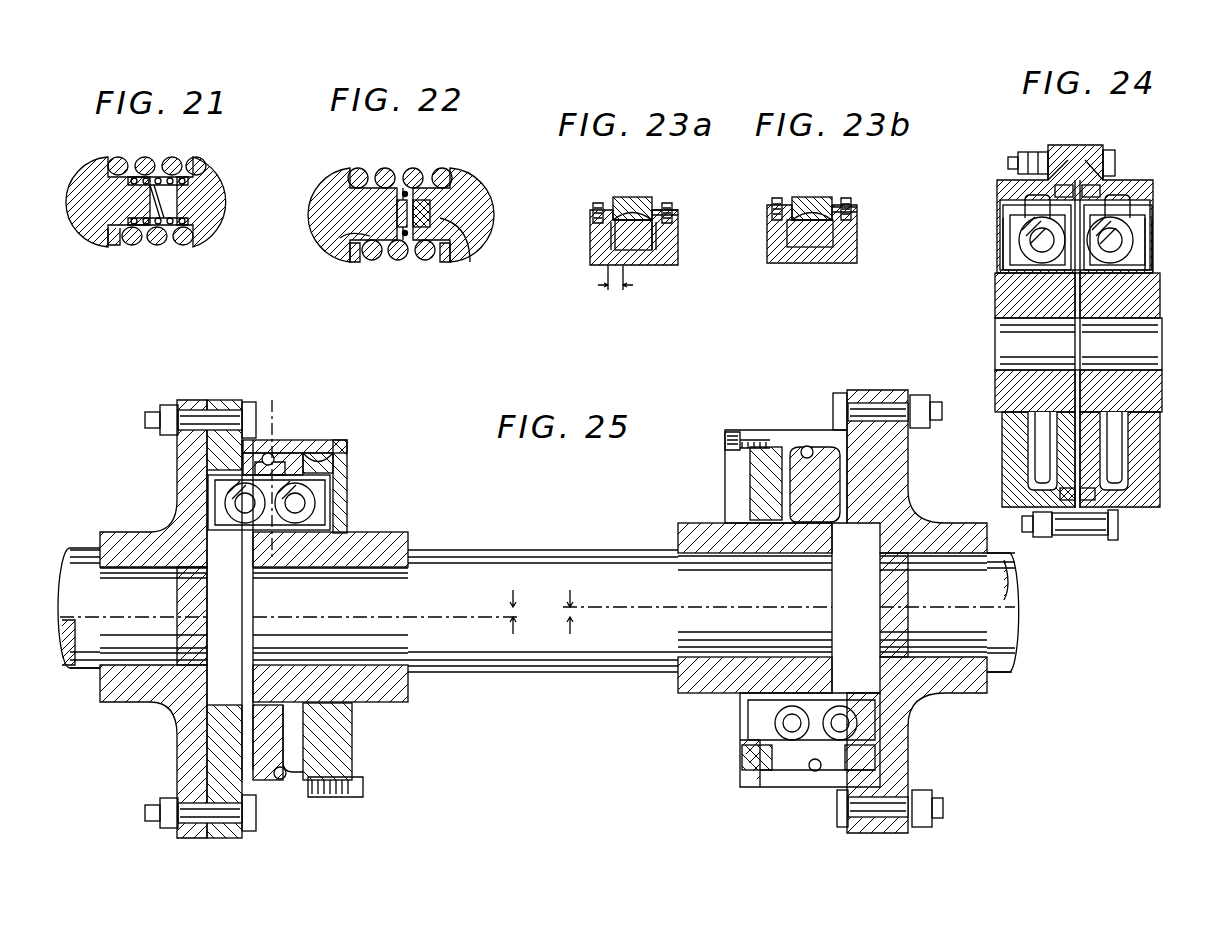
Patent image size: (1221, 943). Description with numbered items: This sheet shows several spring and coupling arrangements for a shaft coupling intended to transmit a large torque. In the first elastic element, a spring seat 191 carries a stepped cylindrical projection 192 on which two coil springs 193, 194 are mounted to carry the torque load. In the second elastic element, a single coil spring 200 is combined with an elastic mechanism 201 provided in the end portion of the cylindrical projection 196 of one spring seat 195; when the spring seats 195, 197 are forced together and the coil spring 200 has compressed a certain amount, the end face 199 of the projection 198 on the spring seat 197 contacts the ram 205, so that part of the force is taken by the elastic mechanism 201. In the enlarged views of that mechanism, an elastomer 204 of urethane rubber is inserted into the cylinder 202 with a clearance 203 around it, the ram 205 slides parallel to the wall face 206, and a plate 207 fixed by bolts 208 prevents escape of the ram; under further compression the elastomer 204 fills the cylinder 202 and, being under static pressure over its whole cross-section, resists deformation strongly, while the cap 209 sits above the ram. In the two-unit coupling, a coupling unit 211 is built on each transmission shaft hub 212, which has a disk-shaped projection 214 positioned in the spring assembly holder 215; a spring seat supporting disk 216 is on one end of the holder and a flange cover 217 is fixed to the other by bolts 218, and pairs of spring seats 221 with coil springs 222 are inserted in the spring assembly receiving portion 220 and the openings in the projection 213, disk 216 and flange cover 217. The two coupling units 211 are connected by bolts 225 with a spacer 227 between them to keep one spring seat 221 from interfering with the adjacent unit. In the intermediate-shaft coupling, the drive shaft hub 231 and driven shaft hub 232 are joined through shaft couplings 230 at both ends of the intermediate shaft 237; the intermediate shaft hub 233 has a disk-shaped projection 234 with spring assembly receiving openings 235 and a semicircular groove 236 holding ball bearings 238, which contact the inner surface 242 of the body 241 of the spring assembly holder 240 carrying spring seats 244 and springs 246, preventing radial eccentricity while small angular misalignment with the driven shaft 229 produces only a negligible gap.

In FIG. 21, the spring seat 191 is at (252, 212).
In FIG. 21, the stepped cylindrical projection 192 is at (188, 247).
In FIG. 21, the coil spring 193 is at (195, 160).
In FIG. 21, the coil spring 194 is at (170, 188).
In FIG. 22, the spring seat 195 is at (480, 178).
In FIG. 22, the cylindrical projection 196 is at (418, 196).
In FIG. 22, the spring seat 197 is at (322, 180).
In FIG. 22, the projection 198 is at (372, 186).
In FIG. 22, the end face 199 is at (400, 240).
In FIG. 22, the coil spring 200 is at (432, 200).
In FIG. 22, the elastic mechanism 201 is at (465, 245).
In FIG. 23a, the elastic mechanism 201 is at (661, 276).
In FIG. 23b, the elastic mechanism 201 is at (790, 276).
In FIG. 23a, the cylinder 202 is at (612, 228).
In FIG. 23a, the clearance 203 is at (614, 290).
In FIG. 22, the elastomer 204 is at (430, 214).
In FIG. 23a, the elastomer 204 is at (620, 240).
In FIG. 23b, the elastomer 204 is at (820, 250).
In FIG. 22, the ram 205 is at (350, 240).
In FIG. 23a, the ram 205 is at (642, 200).
In FIG. 23b, the ram 205 is at (818, 200).
In FIG. 23a, the wall face 206 is at (658, 242).
In FIG. 23a, the plate 207 is at (676, 215).
In FIG. 23b, the plate 207 is at (857, 211).
In FIG. 23a, the bolts 208 is at (673, 205).
In FIG. 23b, the bolts 208 is at (848, 200).
In FIG. 22, the cap block 209 is at (397, 214).
In FIG. 23a, the cap block 209 is at (627, 197).
In FIG. 23b, the cap block 209 is at (800, 197).
In FIG. 24, the coupling unit 211 is at (1149, 170).
In FIG. 24, the transmission shaft hub 212 is at (988, 302).
In FIG. 24, the projection 213 is at (1150, 268).
In FIG. 24, the disk-shaped projection 214 is at (1020, 200).
In FIG. 24, the spring assembly holder 215 is at (1130, 175).
In FIG. 24, the spring seat supporting disk 216 is at (1148, 220).
In FIG. 24, the flange cover 217 is at (1077, 185).
In FIG. 24, the bolts 218 is at (1088, 185).
In FIG. 24, the spring assembly receiving portion 220 is at (1150, 212).
In FIG. 24, the spring seats 221 is at (1010, 262).
In FIG. 24, the springs 222 is at (1030, 238).
In FIG. 24, the bolts 225 is at (1020, 160).
In FIG. 24, the spacer 227 is at (1068, 190).
In FIG. 25, the driven shaft 229 is at (993, 665).
In FIG. 25, the shaft coupling 230 is at (172, 396).
In FIG. 25, the drive shaft hub 231 is at (152, 535).
In FIG. 25, the driven shaft hub 232 is at (932, 695).
In FIG. 25, the intermediate shaft hub 233 is at (390, 535).
In FIG. 25, the disk-shaped projection 234 is at (285, 470).
In FIG. 25, the spring assembly receiving openings 235 is at (336, 455).
In FIG. 25, the circumferential semicircular groove 236 is at (262, 455).
In FIG. 25, the intermediate shaft 237 is at (546, 550).
In FIG. 25, the ball bearings 238 is at (276, 462).
In FIG. 25, the spring assembly holder 240 is at (348, 446).
In FIG. 25, the body 241 is at (272, 400).
In FIG. 25, the inner surface 242 is at (320, 452).
In FIG. 25, the spring seats 244 is at (330, 490).
In FIG. 25, the springs 246 is at (312, 506).